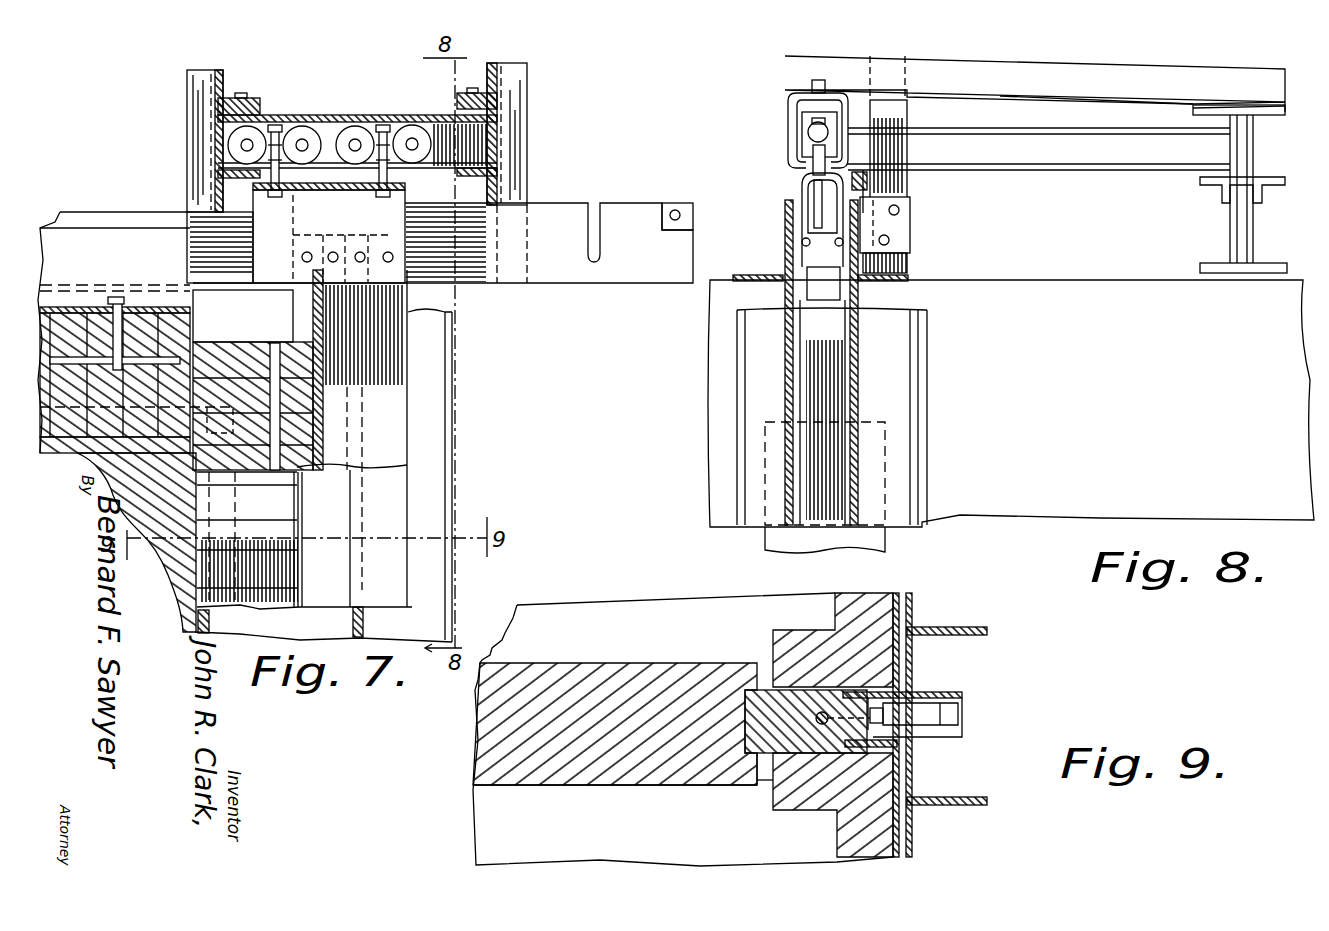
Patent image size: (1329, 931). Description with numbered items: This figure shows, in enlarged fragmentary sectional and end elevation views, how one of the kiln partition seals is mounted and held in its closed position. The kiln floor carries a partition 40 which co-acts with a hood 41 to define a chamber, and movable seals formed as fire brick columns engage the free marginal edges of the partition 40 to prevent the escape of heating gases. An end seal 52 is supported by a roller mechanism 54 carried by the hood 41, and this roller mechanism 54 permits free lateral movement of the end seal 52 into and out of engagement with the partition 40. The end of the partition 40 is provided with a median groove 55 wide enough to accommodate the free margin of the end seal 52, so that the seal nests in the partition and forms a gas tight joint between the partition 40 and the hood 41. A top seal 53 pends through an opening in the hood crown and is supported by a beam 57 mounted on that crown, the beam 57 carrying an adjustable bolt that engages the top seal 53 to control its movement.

In FIG. 7, the partition 40 is at (156, 563).
In FIG. 9, the partition 40 is at (618, 668).
In FIG. 8, the hood 41 is at (1175, 508).
In FIG. 9, the hood 41 is at (898, 600).
In FIG. 7, the end seal 52 is at (236, 338).
In FIG. 8, the end seal 52 is at (822, 345).
In FIG. 9, the end seal 52 is at (787, 727).
In FIG. 7, the top seal 53 is at (75, 325).
In FIG. 7, the roller mechanism 54 is at (300, 133).
In FIG. 8, the roller mechanism 54 is at (818, 140).
In FIG. 7, the median groove 55 is at (208, 634).
In FIG. 9, the median groove 55 is at (748, 698).
In FIG. 8, the beam 57 is at (1097, 155).